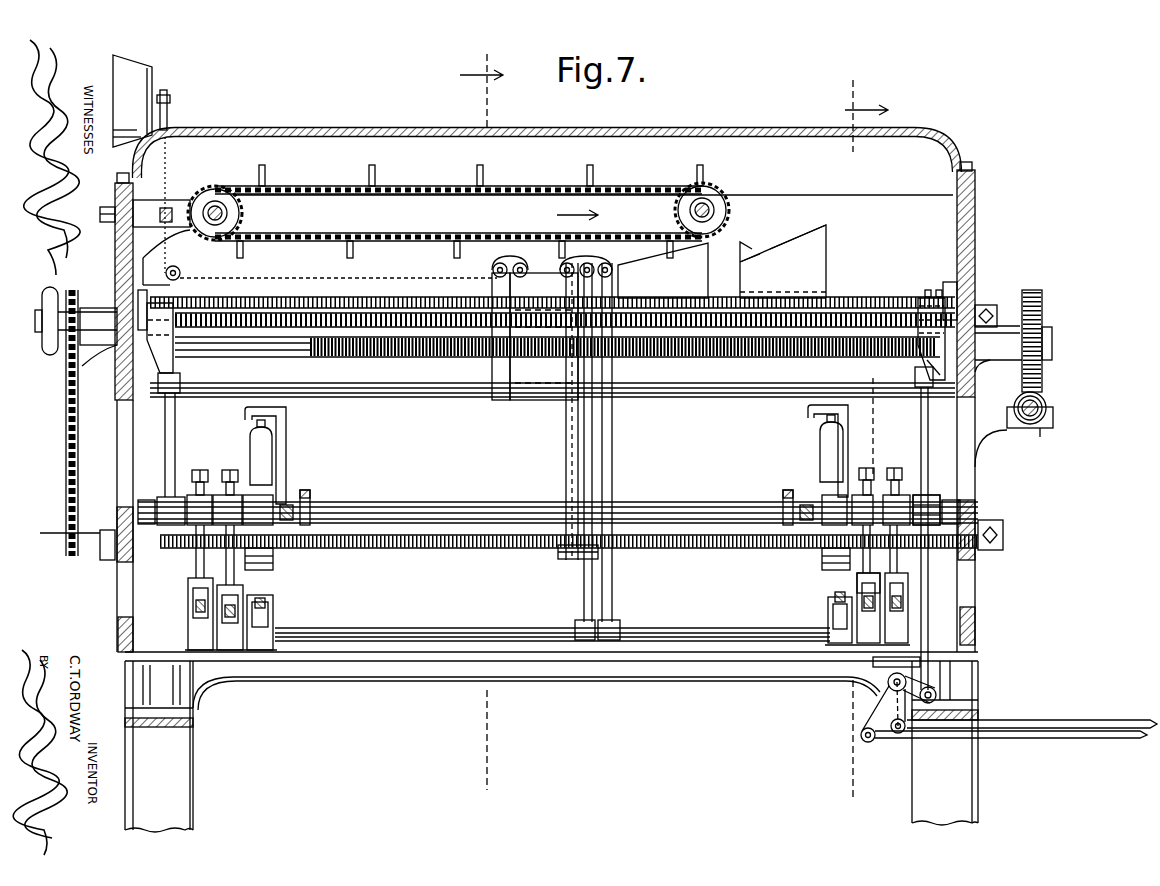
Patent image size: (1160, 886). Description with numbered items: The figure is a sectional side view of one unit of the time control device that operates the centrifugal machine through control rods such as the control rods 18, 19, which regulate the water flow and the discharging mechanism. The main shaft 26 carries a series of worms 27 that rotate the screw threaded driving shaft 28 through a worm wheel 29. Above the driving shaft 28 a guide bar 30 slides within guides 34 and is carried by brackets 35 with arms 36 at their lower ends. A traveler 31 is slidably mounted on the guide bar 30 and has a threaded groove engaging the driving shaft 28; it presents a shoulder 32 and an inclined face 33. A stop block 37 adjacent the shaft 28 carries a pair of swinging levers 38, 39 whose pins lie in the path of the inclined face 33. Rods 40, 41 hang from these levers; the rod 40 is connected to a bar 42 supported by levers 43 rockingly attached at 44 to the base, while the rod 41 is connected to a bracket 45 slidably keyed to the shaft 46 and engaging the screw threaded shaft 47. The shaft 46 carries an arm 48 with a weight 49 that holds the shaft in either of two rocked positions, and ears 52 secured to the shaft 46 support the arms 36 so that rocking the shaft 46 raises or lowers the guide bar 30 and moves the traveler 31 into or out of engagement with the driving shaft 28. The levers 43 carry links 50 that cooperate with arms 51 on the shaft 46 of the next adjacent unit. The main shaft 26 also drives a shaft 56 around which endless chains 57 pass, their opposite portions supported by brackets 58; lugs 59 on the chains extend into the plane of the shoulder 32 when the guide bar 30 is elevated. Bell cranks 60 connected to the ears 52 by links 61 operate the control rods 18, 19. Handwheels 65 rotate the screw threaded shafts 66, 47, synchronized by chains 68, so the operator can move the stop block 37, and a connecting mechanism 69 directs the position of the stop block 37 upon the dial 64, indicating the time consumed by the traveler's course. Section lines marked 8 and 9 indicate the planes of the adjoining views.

The section line 8- 8 is at (866, 443).
The section line 9- 9 is at (481, 422).
The control rod 18 is at (1052, 735).
The control rod 19 is at (1025, 724).
The shaft 26 is at (1041, 401).
The worms 27 is at (1053, 412).
The screw threaded driving shaft 28 is at (893, 352).
The worm wheel 29 is at (1030, 297).
The guide bar 30 is at (890, 297).
The traveler 31 is at (722, 261).
The shoulder 32 is at (748, 252).
The inclined face 33 is at (792, 241).
The guides 34 is at (952, 300).
The brackets 35 is at (926, 350).
The arms 36 is at (176, 436).
The stop block 37 is at (535, 336).
The lever 38 is at (597, 263).
The lever 39 is at (497, 264).
The rod 40 is at (613, 477).
The rod 41 is at (571, 472).
The bar 42 is at (436, 636).
The levers 43 is at (837, 594).
The rocking attachment 44 is at (828, 605).
The bracket 45 is at (573, 560).
The shaft 46 is at (703, 503).
The screw threaded shaft 47 is at (378, 552).
The arm 48 is at (809, 457).
The weight 49 is at (829, 438).
The links 50 is at (898, 578).
The arms 51 is at (898, 479).
The ears 52 is at (930, 490).
The shaft 56 is at (708, 206).
The endless chains 57 is at (442, 187).
The brackets 58 is at (218, 206).
The lugs 59 is at (594, 171).
The bell cranks 60 is at (878, 714).
The links 61 is at (929, 618).
The dial 64 is at (145, 84).
The handwheel 65 is at (50, 352).
The screw threaded shaft 66 is at (306, 340).
The chains 68 is at (69, 478).
The connecting mechanism 69 is at (302, 278).